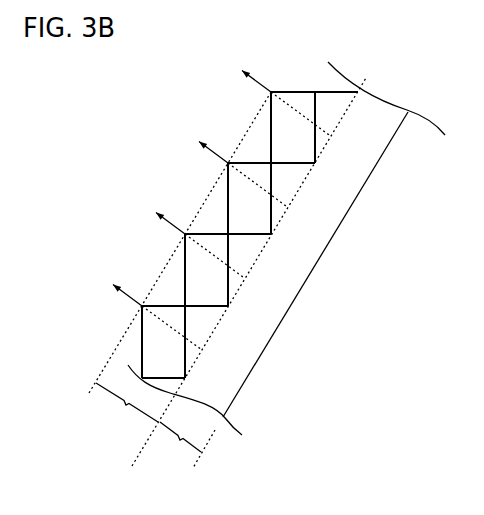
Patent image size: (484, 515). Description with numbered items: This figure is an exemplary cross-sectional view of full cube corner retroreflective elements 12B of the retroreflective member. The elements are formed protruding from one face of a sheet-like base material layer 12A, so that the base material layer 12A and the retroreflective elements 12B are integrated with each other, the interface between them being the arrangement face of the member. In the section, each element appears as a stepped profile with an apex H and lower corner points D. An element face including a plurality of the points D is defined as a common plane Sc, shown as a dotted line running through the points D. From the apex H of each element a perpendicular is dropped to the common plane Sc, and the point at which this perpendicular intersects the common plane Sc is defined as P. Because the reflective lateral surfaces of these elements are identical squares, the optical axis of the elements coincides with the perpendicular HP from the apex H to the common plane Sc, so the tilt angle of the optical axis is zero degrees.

The base material layer 12A is at (277, 293).
The retroreflective elements 12B is at (180, 264).
The common plane Sc is at (279, 271).
The apex of the element H is at (235, 223).
The point P is at (244, 229).
The points D is at (249, 272).